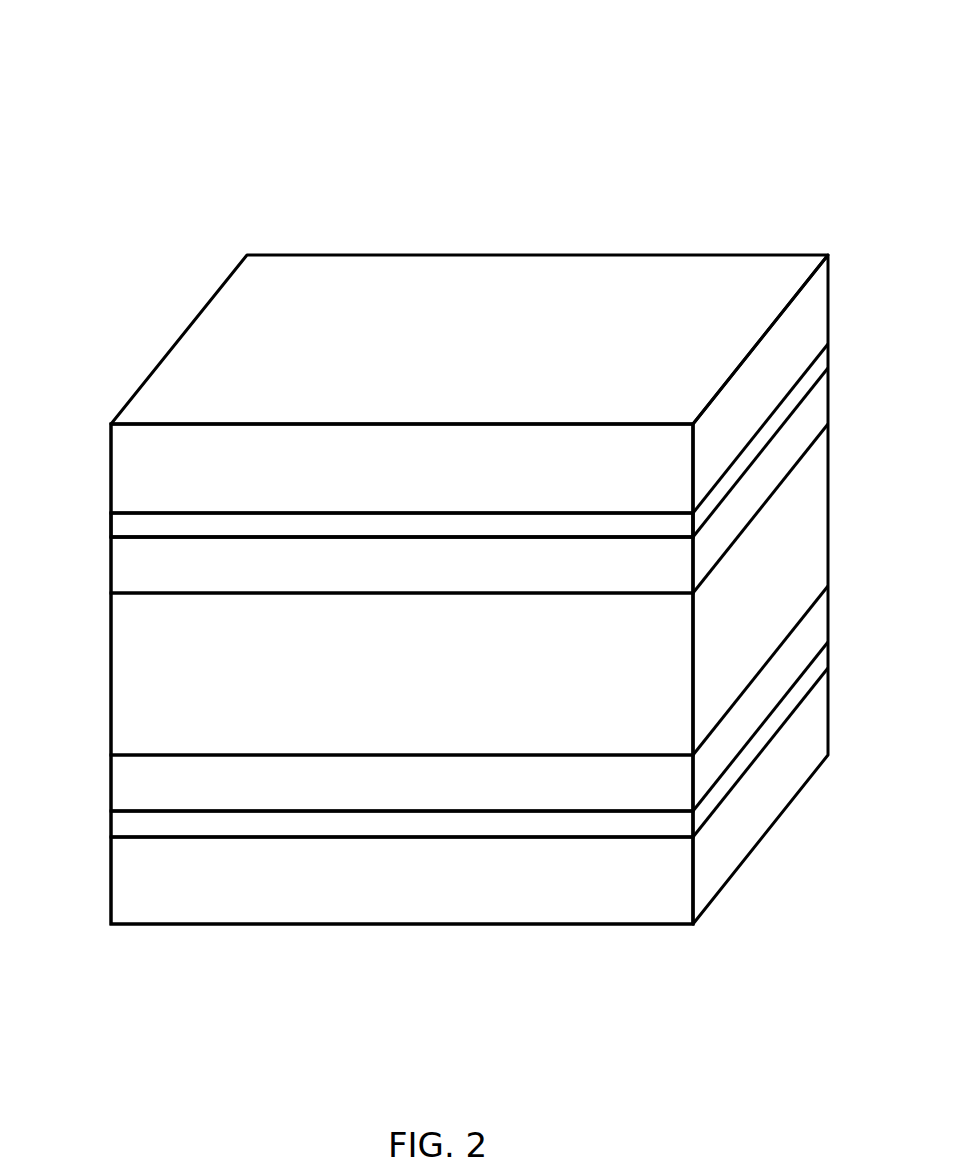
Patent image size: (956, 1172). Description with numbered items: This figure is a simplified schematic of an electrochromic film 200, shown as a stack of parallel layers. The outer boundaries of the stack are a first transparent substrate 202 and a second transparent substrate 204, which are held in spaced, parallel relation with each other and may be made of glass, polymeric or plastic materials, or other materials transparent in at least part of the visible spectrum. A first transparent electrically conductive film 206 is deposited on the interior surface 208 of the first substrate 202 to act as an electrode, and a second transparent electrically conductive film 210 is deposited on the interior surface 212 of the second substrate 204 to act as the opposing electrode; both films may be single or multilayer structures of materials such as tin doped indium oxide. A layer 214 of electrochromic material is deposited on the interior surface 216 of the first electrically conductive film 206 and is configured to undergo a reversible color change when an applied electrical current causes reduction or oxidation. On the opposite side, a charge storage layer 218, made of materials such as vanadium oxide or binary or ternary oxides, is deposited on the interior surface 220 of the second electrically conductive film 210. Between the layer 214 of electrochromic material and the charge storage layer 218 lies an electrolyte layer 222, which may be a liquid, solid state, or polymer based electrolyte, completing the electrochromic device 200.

The electrochromic film 200 is at (244, 88).
The first transparent substrate 202 is at (423, 901).
The second transparent substrate 204 is at (423, 481).
The first transparent electrically conductive film 206 is at (588, 824).
The interior surface of the first substrate 208 is at (259, 855).
The second transparent electrically conductive film 210 is at (196, 527).
The interior surface of the second substrate 212 is at (652, 500).
The layer of electrochromic material 214 is at (423, 797).
The interior surface of the first electrically conductive film 216 is at (153, 800).
The charge storage layer 218 is at (423, 574).
The interior surface of the second electrically conductive film 220 is at (146, 548).
The electrolyte layer 222 is at (423, 661).